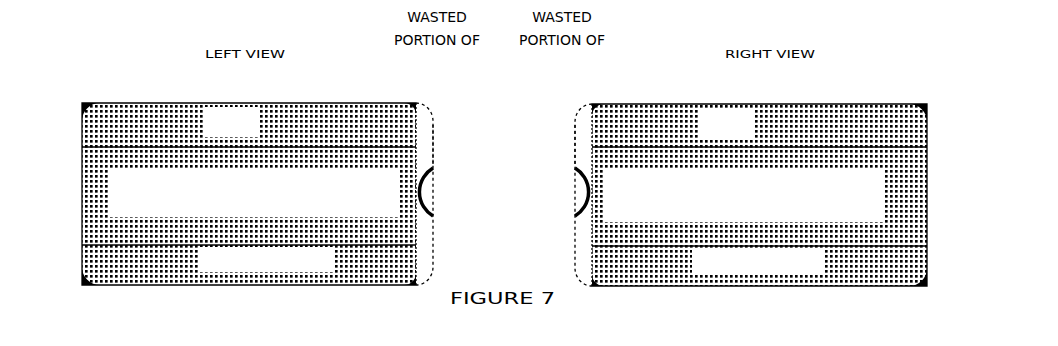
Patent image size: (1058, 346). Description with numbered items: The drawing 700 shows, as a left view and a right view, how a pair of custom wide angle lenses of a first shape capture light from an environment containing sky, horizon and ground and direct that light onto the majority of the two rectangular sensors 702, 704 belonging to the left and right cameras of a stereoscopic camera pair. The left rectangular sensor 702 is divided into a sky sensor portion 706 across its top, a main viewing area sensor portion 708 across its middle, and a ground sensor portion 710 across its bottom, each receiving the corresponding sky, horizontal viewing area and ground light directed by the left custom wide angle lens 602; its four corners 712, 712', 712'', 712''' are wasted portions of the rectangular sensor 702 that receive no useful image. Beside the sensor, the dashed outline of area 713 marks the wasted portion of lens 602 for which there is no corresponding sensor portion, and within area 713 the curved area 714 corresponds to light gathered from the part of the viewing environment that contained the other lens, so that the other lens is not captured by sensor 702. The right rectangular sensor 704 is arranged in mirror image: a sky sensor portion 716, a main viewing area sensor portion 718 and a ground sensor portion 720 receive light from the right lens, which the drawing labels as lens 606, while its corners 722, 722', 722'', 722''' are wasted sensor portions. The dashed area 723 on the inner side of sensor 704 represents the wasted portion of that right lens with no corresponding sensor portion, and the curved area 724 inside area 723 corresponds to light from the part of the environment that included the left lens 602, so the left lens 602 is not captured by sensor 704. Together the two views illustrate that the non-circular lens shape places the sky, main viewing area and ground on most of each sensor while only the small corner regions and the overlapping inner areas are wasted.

The drawing 700 is at (115, 16).
The rectangular sensor 702 is at (177, 104).
The rectangular sensor 704 is at (660, 104).
The sensor portion 706 is at (265, 130).
The sensor portion 708 is at (102, 191).
The sensor portion 710 is at (229, 286).
The wasted sensor portion 712 is at (393, 94).
The wasted sensor portion 712' is at (86, 94).
The wasted sensor portion 712'' is at (88, 297).
The wasted sensor portion 712''' is at (403, 298).
The wasted lens area 713 is at (427, 133).
The lens-overlap area 714 is at (429, 192).
The sensor portion 716 is at (755, 128).
The sensor portion 718 is at (887, 198).
The sensor portion 720 is at (743, 286).
The wasted sensor portion 722 is at (924, 99).
The wasted sensor portion 722' is at (618, 92).
The wasted sensor portion 722'' is at (588, 300).
The wasted sensor portion 722''' is at (926, 300).
The wasted lens area 723 is at (581, 133).
The lens-overlap area 724 is at (578, 196).
The custom wide angle lens 602 is at (436, 109).
The lens 606 (wasted portion) 606 is at (561, 109).